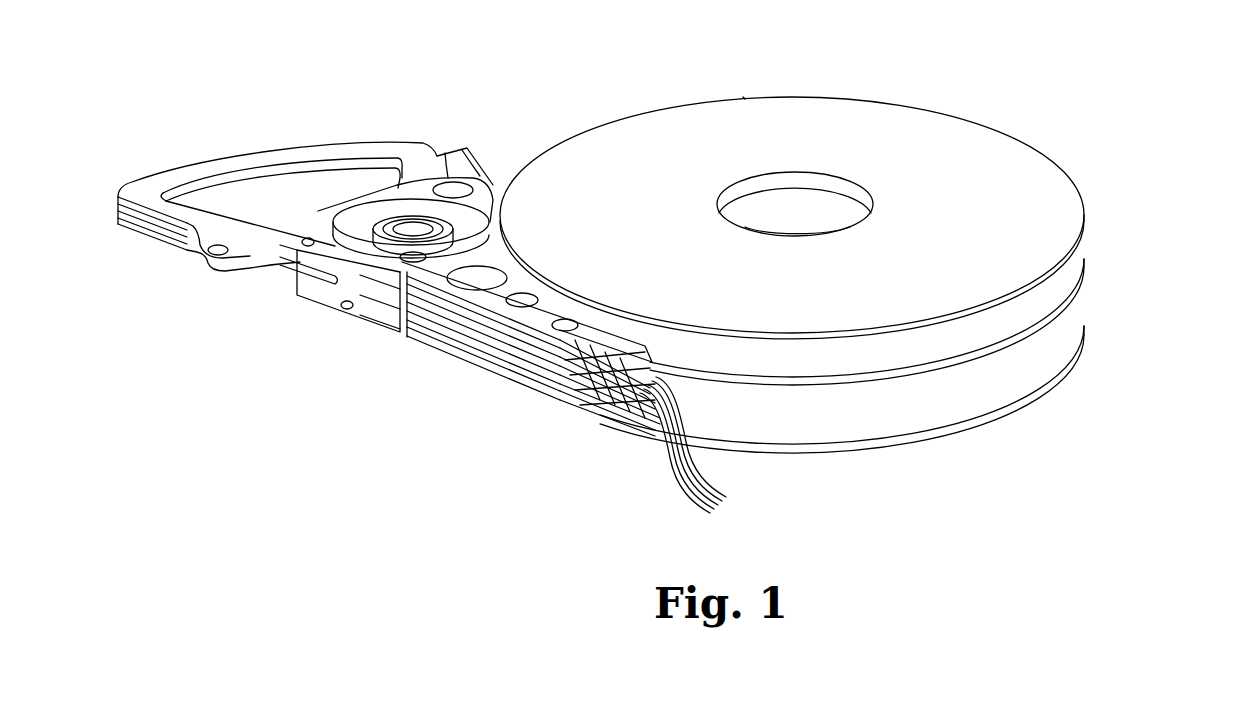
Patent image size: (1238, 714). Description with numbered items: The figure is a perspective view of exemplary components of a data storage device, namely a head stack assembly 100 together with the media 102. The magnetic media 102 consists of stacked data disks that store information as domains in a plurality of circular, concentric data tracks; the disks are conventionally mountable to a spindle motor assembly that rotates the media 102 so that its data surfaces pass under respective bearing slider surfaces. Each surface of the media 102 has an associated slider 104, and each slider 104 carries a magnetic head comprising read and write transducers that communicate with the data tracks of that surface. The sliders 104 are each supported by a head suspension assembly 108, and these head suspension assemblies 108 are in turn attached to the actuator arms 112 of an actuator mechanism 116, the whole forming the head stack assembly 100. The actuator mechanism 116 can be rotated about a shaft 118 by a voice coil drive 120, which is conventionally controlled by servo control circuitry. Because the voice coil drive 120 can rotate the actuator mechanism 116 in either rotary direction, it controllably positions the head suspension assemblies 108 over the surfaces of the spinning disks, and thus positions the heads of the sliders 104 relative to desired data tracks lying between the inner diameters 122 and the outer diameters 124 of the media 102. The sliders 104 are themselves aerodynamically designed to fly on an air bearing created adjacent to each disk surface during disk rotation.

The head stack assembly 100 is at (278, 361).
The media 102 is at (934, 99).
The slider 104 is at (697, 447).
The head suspension assembly 108 is at (650, 347).
The actuator arms 112 is at (430, 345).
The actuator mechanism 116 is at (488, 161).
The shaft 118 is at (420, 235).
The voice coil drive 120 is at (250, 146).
The inner diameters 122 is at (790, 230).
The outer diameters 124 is at (743, 97).